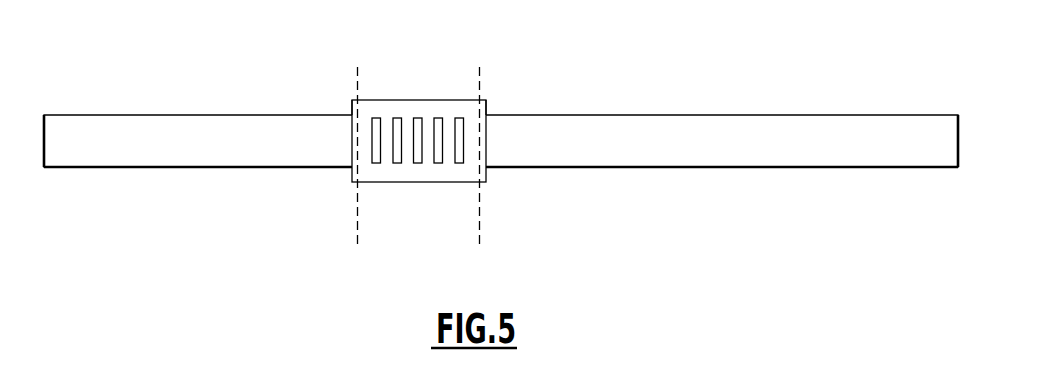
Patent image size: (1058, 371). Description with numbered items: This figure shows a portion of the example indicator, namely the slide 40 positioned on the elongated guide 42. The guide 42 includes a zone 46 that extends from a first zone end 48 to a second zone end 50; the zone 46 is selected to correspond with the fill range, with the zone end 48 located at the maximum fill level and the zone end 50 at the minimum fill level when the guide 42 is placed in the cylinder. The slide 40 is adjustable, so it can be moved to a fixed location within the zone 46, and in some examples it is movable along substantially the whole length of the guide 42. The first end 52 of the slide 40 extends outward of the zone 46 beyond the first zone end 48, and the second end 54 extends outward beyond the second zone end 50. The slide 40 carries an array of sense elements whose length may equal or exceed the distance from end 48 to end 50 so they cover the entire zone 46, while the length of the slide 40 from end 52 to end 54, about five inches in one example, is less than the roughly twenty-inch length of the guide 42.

The slide 40 is at (408, 170).
The guide 42 is at (640, 135).
The zone 46 is at (410, 78).
The first zone end 48 is at (357, 85).
The second zone end 50 is at (480, 85).
The first end of the slide 52 is at (352, 110).
The second end of the slide 54 is at (486, 110).